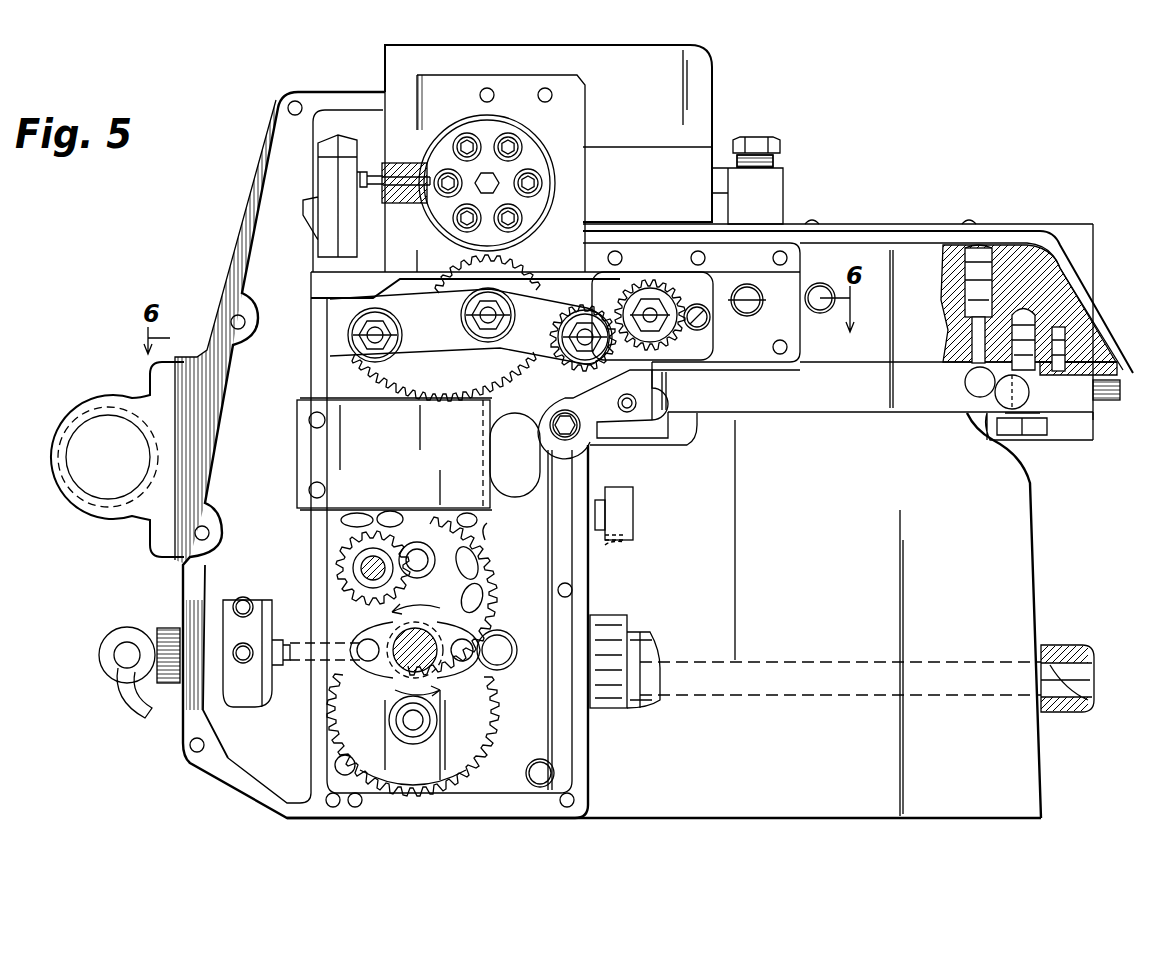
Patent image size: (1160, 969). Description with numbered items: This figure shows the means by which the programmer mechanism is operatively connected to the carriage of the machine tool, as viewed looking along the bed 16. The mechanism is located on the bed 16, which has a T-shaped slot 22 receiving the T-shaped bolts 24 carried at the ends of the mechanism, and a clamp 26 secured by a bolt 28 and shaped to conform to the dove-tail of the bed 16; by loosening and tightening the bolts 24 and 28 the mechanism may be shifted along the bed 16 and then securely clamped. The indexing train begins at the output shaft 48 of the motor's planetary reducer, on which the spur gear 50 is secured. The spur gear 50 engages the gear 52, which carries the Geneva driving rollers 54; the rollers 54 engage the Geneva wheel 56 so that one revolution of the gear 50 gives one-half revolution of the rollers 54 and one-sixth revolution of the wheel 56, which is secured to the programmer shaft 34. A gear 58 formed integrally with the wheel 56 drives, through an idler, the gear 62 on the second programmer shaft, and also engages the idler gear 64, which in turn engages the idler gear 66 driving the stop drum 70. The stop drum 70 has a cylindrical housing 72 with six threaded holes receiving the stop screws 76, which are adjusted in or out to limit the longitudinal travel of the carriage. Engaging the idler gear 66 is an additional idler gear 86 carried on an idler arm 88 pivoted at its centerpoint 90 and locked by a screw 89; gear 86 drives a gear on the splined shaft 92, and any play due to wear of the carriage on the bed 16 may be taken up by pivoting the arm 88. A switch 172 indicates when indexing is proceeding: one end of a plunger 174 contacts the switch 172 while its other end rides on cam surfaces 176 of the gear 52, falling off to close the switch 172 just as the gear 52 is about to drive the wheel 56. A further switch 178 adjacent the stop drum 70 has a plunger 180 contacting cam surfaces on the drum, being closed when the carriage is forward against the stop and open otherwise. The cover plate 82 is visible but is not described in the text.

The bed 16 is at (832, 499).
The T-shaped slot 22 is at (620, 547).
The T-shaped bolts 24 is at (630, 515).
The clamp 26 is at (1062, 430).
The bolt 28 is at (1020, 428).
The programmer shaft 34 is at (417, 560).
The output shaft 48 is at (363, 567).
The spur gear 50 is at (340, 563).
The gear 52 is at (495, 690).
The Geneva driving rollers 54 is at (360, 647).
The Geneva wheel 56 is at (495, 545).
The gear 58 is at (487, 523).
The gear 62 is at (468, 762).
The idler gear 64 is at (433, 383).
The idler gear 66 is at (572, 335).
The stop drum 70 is at (577, 143).
The housing 72 is at (485, 237).
The stop screws 76 is at (508, 137).
The cover plate 82 is at (691, 306).
The idler gear 86 is at (573, 362).
The idler arm 88 is at (420, 300).
The screw 89 is at (350, 348).
The centerpoint 90 is at (503, 317).
The splined shaft 92 is at (660, 340).
The switch 172 is at (247, 705).
The plunger 174 is at (327, 697).
The cam surfaces 176 is at (392, 700).
The switch 178 is at (325, 240).
The plunger 180 is at (395, 178).